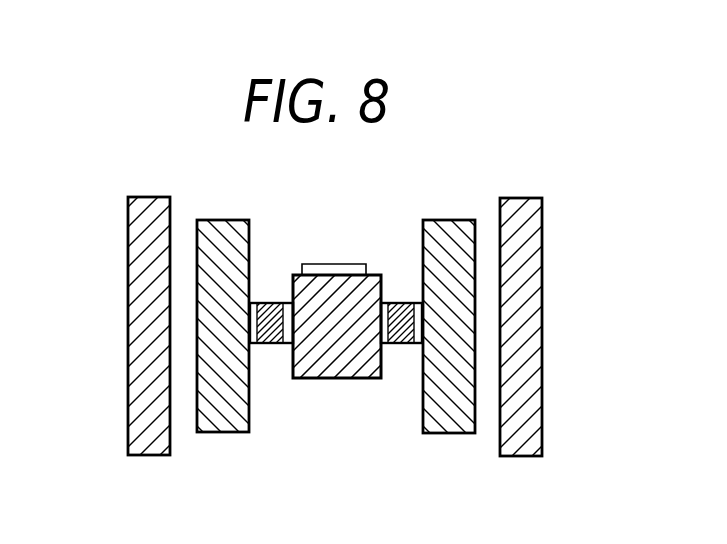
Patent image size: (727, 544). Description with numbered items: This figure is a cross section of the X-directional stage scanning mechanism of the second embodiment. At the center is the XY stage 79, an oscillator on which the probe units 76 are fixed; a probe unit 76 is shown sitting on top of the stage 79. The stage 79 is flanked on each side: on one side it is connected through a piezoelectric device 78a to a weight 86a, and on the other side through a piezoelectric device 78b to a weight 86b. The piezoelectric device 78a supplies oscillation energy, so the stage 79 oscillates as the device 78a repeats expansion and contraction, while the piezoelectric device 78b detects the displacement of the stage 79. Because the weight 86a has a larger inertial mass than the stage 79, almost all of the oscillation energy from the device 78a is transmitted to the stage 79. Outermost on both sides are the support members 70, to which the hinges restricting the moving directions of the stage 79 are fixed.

The support member 70 is at (137, 395).
The weight 86a is at (217, 230).
The weight 86b is at (442, 242).
The XY stage 79 is at (317, 367).
The probe unit 76 is at (342, 268).
The piezoelectric device 78a is at (268, 302).
The piezoelectric device 78b is at (403, 338).